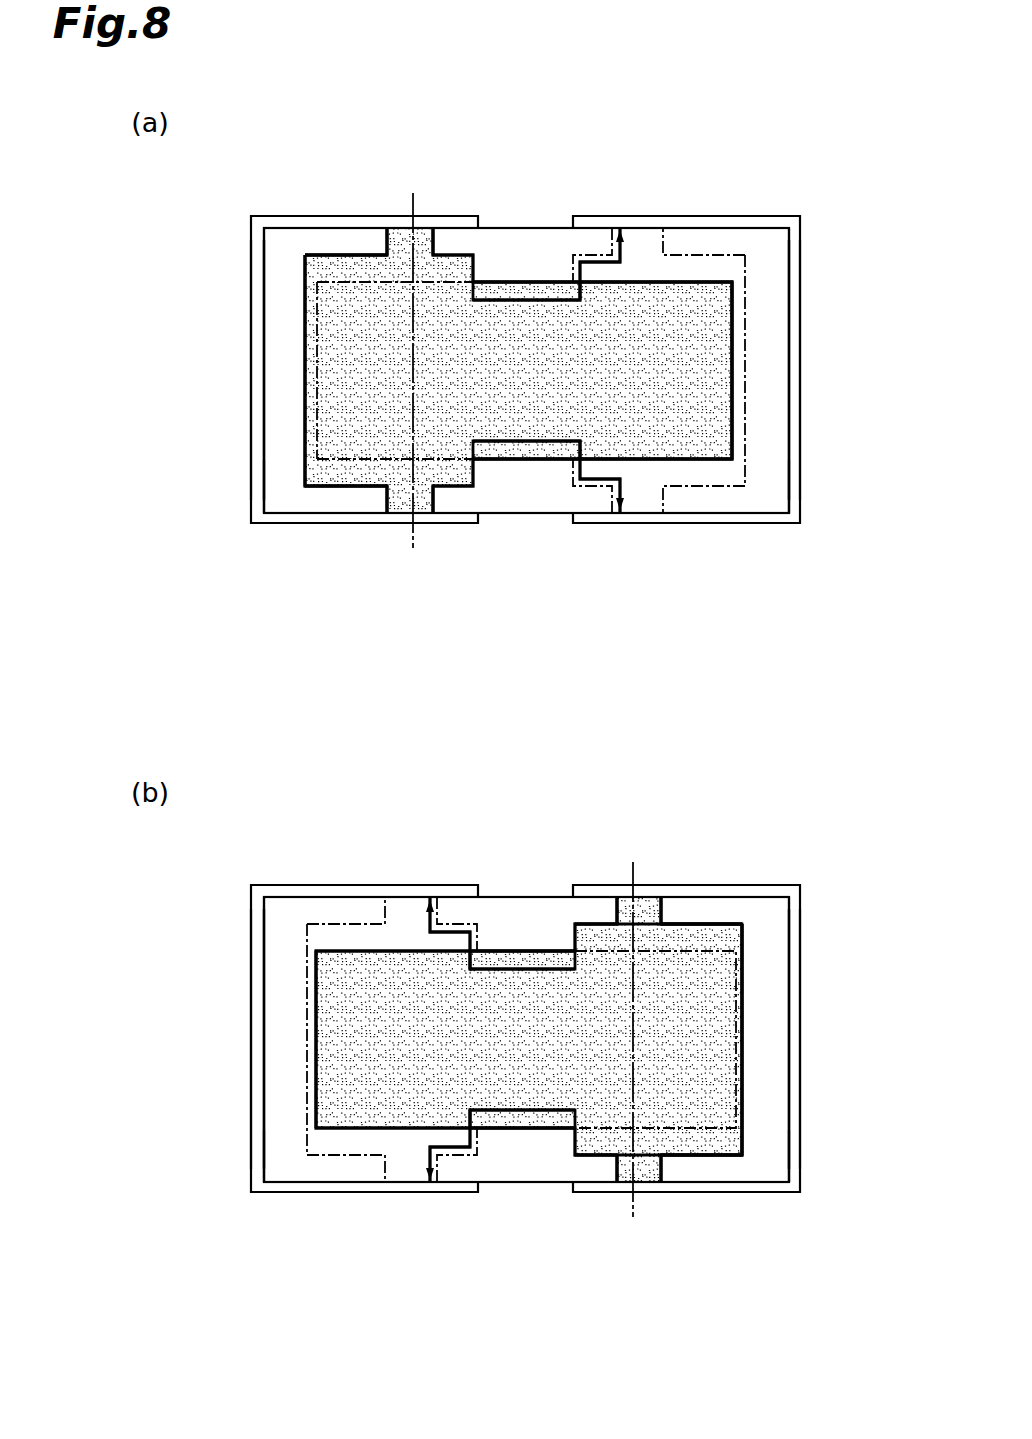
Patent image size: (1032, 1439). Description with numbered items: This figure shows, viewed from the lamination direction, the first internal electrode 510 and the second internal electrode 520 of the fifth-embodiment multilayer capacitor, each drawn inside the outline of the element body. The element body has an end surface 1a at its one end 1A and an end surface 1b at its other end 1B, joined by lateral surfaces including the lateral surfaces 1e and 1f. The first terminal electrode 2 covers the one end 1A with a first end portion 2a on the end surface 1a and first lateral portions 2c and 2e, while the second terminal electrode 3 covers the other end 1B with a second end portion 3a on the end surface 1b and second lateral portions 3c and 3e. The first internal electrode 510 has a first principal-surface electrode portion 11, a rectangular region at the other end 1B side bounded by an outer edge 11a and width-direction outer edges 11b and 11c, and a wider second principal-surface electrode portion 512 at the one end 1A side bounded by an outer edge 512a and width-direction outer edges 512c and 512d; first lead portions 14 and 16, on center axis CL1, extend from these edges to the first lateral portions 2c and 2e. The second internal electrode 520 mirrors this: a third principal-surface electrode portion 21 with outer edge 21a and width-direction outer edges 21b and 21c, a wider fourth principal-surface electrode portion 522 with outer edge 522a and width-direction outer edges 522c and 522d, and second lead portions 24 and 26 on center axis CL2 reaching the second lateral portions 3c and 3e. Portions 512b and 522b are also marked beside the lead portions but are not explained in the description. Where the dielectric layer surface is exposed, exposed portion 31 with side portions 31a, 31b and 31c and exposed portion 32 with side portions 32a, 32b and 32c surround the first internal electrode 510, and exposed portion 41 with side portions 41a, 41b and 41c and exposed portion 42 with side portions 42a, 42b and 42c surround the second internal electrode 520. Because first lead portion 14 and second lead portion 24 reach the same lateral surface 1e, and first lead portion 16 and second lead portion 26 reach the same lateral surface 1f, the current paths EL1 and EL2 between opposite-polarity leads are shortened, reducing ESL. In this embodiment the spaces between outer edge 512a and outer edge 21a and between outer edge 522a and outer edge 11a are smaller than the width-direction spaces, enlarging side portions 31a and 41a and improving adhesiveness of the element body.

The one end 1A is at (240, 352).
The other end 1B is at (816, 355).
The end surface 1a is at (262, 400).
The end surface 1b is at (790, 400).
The lateral surface 1e is at (563, 513).
The lateral surface 1f is at (560, 228).
The first terminal electrode 2 is at (250, 234).
The first end portion 2a is at (262, 325).
The first lateral portion 2c is at (372, 517).
The first lateral portion 2e is at (375, 225).
The second terminal electrode 3 is at (802, 234).
The second end portion 3a is at (790, 325).
The second lateral portion 3c is at (690, 523).
The second lateral portion 3e is at (690, 222).
The first principal-surface electrode portion 11 is at (655, 352).
The outer edge 11a is at (733, 432).
The outer edge 11b is at (647, 459).
The outer edge 11c is at (630, 282).
The first lead portion 14 is at (400, 502).
The first lead portion 16 is at (400, 237).
The third principal-surface electrode portion 21 is at (350, 998).
The outer edge 21a is at (316, 1115).
The outer edge 21b is at (400, 1130).
The outer edge 21c is at (403, 945).
The second lead portion 24 is at (651, 1175).
The second lead portion 26 is at (648, 908).
The exposed portion 31 is at (286, 293).
The side portion 31a is at (293, 470).
The side portion 31b is at (332, 495).
The side portion 31c is at (347, 245).
The exposed portion 32 is at (768, 299).
The side portion 32a is at (777, 472).
The side portion 32b is at (515, 495).
The side portion 32c is at (517, 250).
The exposed portion 41 is at (768, 966).
The side portion 41a is at (760, 1090).
The side portion 41b is at (673, 1150).
The side portion 41c is at (673, 915).
The exposed portion 42 is at (274, 966).
The side portion 42a is at (305, 1095).
The side portion 42b is at (522, 1192).
The side portion 42c is at (555, 947).
The first internal electrode 510 is at (717, 282).
The second principal-surface electrode portion 512 is at (360, 352).
The outer edge 512a is at (305, 440).
The connecting portion of first lead electrode 512b is at (505, 290).
The outer edge 512c is at (318, 488).
The outer edge 512d is at (315, 255).
The second internal electrode 520 is at (747, 912).
The fourth principal-surface electrode portion 522 is at (705, 992).
The outer edge 522a is at (742, 1110).
The connecting portion of second lead electrode 522b is at (598, 935).
The outer edge 522c is at (722, 1160).
The outer edge 522d is at (728, 922).
The center axis CL1 is at (415, 210).
The center axis CL2 is at (633, 880).
The current path EL1 is at (540, 460).
The current path EL2 is at (527, 282).